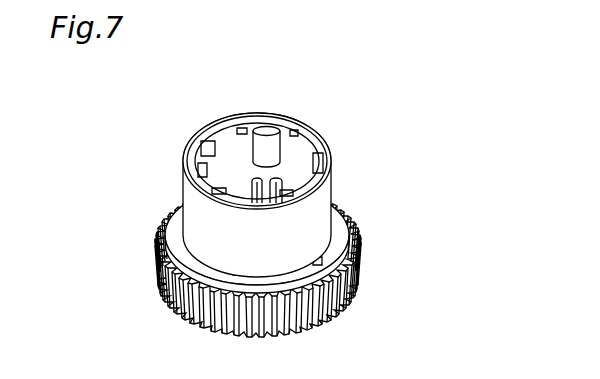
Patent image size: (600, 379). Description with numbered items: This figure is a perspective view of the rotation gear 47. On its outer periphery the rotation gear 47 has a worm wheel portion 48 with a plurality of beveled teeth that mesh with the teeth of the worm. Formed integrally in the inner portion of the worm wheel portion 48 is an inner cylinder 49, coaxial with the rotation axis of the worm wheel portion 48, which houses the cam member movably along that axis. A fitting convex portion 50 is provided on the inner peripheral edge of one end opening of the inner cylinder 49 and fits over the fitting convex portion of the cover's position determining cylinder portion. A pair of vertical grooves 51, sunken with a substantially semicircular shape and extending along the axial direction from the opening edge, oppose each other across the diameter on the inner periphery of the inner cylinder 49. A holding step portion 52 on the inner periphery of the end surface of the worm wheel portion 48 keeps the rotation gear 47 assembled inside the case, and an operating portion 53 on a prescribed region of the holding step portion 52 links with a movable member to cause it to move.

The rotation gear 47 is at (362, 158).
The worm wheel portion 48 is at (156, 272).
The inner cylinder 49 is at (187, 188).
The fitting convex portion 50 is at (207, 134).
The vertical grooves 51 is at (268, 130).
The holding step portion 52 is at (348, 275).
The operating portion 53 is at (173, 253).